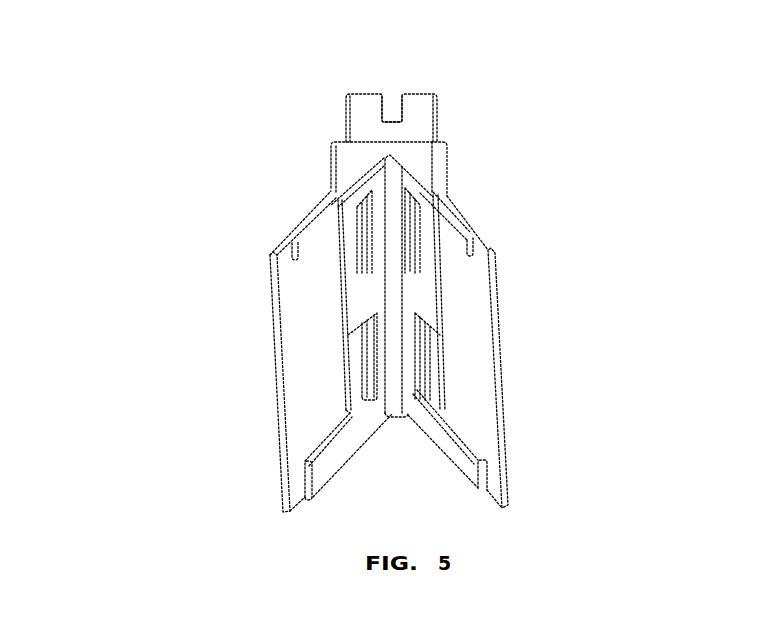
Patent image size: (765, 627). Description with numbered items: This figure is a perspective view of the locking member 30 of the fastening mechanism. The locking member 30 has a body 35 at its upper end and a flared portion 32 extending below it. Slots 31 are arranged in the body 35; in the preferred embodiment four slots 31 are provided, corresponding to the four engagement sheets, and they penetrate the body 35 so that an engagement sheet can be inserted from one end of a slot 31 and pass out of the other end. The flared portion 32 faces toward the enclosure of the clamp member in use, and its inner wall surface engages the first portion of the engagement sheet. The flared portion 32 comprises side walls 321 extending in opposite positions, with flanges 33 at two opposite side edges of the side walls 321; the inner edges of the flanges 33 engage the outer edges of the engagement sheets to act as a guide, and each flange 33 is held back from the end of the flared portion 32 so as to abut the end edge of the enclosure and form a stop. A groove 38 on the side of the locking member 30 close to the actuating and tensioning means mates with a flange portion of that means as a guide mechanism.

The locking member 30 is at (163, 180).
The slots 31 is at (368, 217).
The flared portion 32 is at (312, 282).
The side walls 321 is at (294, 318).
The flanges 33 is at (312, 238).
The body 35 is at (421, 135).
The groove 38 is at (383, 110).